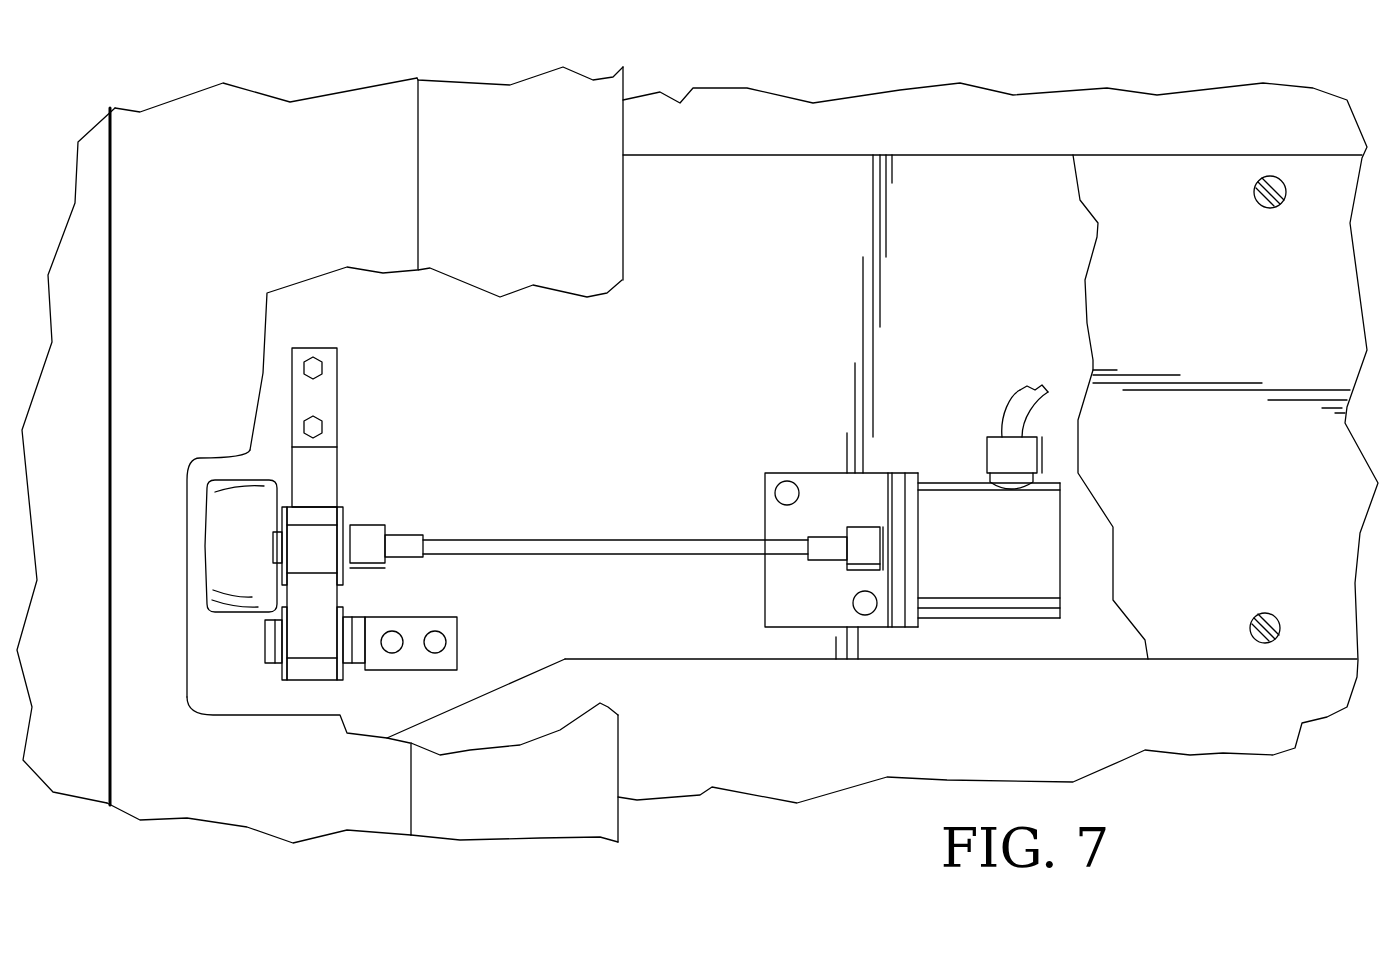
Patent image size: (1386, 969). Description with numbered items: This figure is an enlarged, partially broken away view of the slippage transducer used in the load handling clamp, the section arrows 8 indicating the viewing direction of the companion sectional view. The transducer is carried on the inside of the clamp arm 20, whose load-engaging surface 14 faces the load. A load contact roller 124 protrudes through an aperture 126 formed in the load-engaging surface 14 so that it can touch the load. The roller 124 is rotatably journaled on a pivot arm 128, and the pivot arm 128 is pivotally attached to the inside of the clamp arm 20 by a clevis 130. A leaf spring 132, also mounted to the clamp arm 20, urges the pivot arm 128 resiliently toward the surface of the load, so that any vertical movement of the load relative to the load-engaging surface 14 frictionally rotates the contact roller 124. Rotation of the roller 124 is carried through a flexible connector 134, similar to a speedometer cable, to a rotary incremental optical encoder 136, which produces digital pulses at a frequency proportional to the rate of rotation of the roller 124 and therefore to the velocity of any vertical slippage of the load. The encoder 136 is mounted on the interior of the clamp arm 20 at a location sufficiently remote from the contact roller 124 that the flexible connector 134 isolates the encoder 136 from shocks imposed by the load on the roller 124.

The section line 8- 8 is at (440, 323).
The load-engaging surface 14 is at (495, 112).
The clamp arm 20 is at (690, 378).
The load contact roller 124 is at (220, 500).
The aperture 126 is at (190, 660).
The pivot arm 128 is at (320, 593).
The clevis 130 is at (350, 663).
The leaf spring 132 is at (315, 477).
The flexible connector 134 is at (518, 540).
The rotary incremental optical encoder 136 is at (940, 485).